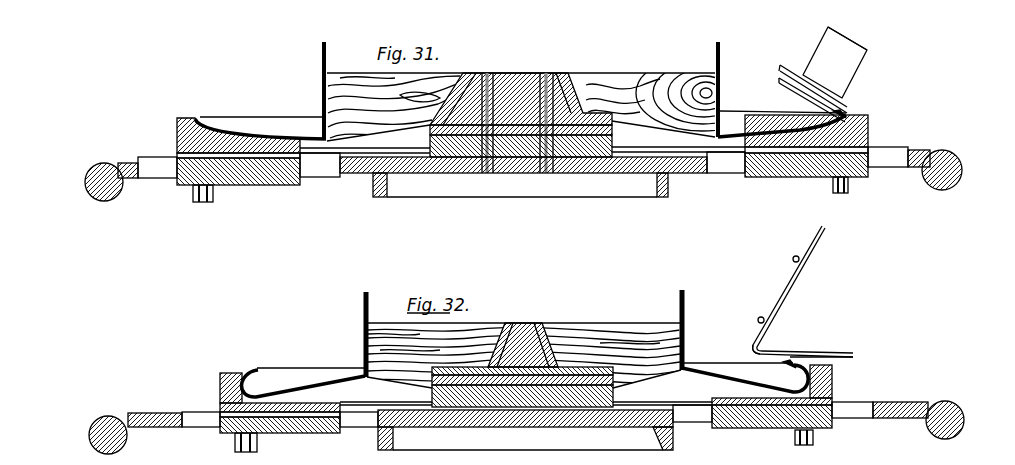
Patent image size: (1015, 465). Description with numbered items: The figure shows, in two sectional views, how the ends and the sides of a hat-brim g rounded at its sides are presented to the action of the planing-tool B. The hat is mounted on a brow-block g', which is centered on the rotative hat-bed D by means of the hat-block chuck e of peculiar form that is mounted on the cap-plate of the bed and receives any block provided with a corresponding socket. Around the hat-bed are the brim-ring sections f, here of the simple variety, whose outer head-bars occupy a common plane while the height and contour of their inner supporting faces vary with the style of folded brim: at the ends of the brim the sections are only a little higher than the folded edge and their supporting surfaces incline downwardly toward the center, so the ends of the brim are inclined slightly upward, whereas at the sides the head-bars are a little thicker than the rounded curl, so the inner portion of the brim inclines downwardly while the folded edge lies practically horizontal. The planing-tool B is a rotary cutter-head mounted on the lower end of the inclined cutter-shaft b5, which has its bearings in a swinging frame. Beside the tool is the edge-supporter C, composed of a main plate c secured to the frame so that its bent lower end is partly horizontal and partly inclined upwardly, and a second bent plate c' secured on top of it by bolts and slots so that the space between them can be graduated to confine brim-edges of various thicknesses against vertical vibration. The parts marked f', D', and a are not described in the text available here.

In FIG. 31, the brow-block g' is at (547, 98).
In FIG. 32, the brow-block g' is at (524, 355).
In FIG. 31, the hat-brim g is at (520, 124).
In FIG. 32, the hat-brim g is at (525, 379).
In FIG. 31, the hat-block chuck e is at (521, 114).
In FIG. 32, the hat-block chuck e is at (522, 356).
In FIG. 31, the brim-ring sections f is at (516, 150).
In FIG. 32, the brim-ring sections f is at (519, 398).
In FIG. 31, the jaw guide pin f' is at (531, 194).
In FIG. 32, the jaw guide pin f' is at (535, 445).
In FIG. 31, the planing-tool B is at (780, 65).
In FIG. 31, the inclined cutter-shaft b5 is at (866, 44).
In FIG. 31, the jaw slide bar D' is at (597, 138).
In FIG. 32, the jaw slide bar D' is at (601, 400).
In FIG. 31, the rotative hat-bed D is at (524, 156).
In FIG. 32, the rotative hat-bed D is at (528, 402).
In FIG. 31, the rod knob a is at (523, 168).
In FIG. 32, the rod knob a is at (526, 418).
In FIG. 32, the edge-supporter C is at (803, 291).
In FIG. 32, the adjustable plate of edge-supporter c' is at (742, 351).
In FIG. 32, the main plate of edge-supporter c is at (821, 350).